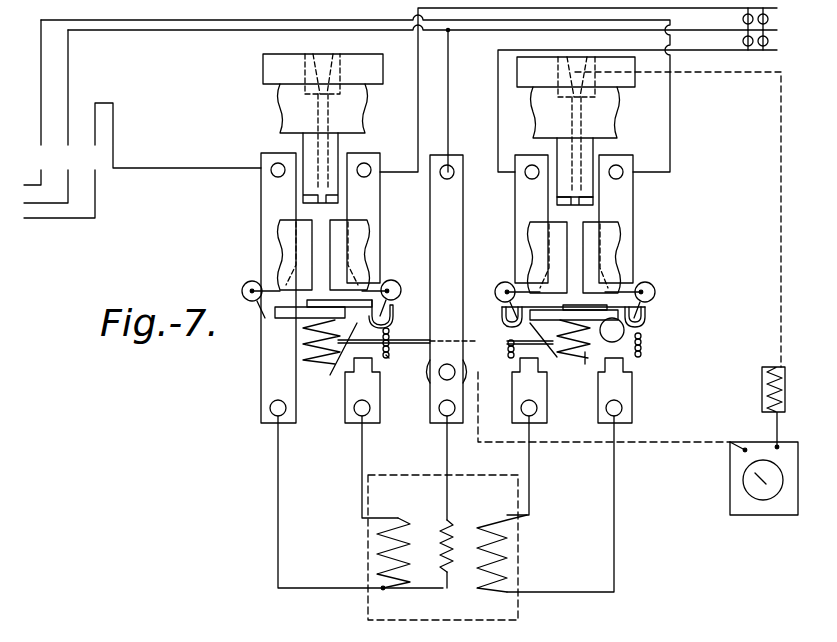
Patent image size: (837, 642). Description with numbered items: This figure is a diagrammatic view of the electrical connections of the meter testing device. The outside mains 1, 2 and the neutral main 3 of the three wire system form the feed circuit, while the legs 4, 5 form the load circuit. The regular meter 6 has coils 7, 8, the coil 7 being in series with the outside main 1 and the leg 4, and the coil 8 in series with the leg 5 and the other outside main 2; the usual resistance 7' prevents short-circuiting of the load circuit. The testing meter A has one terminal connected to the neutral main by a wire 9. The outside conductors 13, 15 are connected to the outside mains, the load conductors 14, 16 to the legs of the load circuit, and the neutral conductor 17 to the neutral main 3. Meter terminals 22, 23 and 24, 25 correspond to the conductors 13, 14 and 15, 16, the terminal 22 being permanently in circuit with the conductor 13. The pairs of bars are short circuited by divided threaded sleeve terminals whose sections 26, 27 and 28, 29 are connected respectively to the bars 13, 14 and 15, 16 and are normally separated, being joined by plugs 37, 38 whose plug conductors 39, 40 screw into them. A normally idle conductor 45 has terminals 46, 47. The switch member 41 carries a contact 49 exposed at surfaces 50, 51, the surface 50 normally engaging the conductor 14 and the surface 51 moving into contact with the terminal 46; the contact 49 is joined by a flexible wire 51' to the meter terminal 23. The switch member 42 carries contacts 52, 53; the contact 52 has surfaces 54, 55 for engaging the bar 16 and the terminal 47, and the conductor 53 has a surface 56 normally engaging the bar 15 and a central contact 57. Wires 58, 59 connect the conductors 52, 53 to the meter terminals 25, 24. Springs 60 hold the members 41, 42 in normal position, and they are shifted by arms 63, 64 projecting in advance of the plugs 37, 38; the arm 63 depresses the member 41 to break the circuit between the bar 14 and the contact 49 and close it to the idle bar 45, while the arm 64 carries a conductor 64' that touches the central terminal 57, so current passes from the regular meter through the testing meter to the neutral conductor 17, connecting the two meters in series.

The outside main 1 is at (175, 160).
The outside main 2 is at (116, 20).
The neutral main 3 is at (125, 29).
The load circuit leg 4 is at (777, 10).
The load circuit leg 5 is at (778, 48).
The regular meter 6 is at (432, 620).
The meter coil 7 is at (401, 553).
The resistance 7' is at (460, 532).
The meter coil 8 is at (480, 563).
The wire 9 is at (648, 442).
The outside conductor 13 is at (261, 194).
The load conductor 14 is at (372, 194).
The outside conductor 15 is at (625, 193).
The load conductor 16 is at (515, 193).
The neutral conductor 17 is at (463, 236).
The meter terminal 22 is at (261, 405).
The meter terminal 23 is at (380, 405).
The meter terminal 24 is at (632, 401).
The meter terminal 25 is at (547, 401).
The sleeve terminal section 26 is at (280, 241).
The sleeve terminal section 27 is at (358, 246).
The sleeve terminal section 28 is at (610, 253).
The sleeve terminal section 29 is at (530, 254).
The plug 37 is at (263, 73).
The plug 38 is at (627, 80).
The plug conductor 39 is at (361, 121).
The plug conductor 40 is at (533, 119).
The switch member 41 is at (277, 311).
The switch member 42 is at (593, 317).
The idle conductor 45 is at (393, 340).
The idle bar terminal 46 is at (345, 341).
The idle bar terminal 47 is at (590, 345).
The contact 49 is at (310, 294).
The contact surface 50 is at (347, 287).
The contact surface 51 is at (334, 357).
The flexible wire 51' is at (403, 361).
The contact 52 is at (503, 313).
The contact 53 is at (646, 316).
The contact surface 54 is at (535, 292).
The contact surface 55 is at (550, 350).
The contact surface 56 is at (620, 300).
The central contact 57 is at (575, 305).
The wire 58 is at (508, 353).
The wire 59 is at (643, 346).
The spring 60 is at (446, 354).
The shifting arm 63 is at (340, 148).
The arm 64 is at (602, 151).
The conductor 64' is at (535, 210).
The testing meter A is at (730, 500).